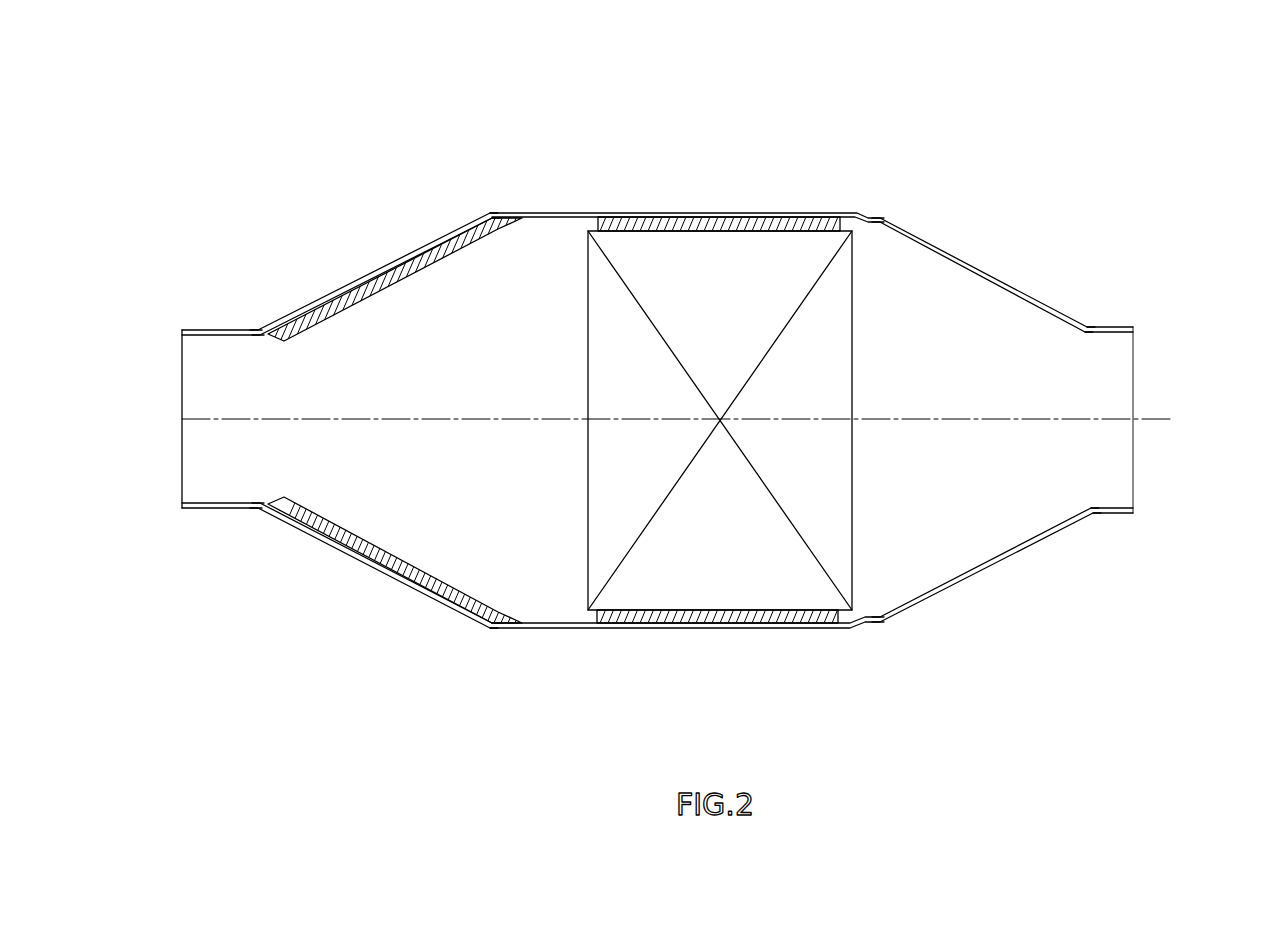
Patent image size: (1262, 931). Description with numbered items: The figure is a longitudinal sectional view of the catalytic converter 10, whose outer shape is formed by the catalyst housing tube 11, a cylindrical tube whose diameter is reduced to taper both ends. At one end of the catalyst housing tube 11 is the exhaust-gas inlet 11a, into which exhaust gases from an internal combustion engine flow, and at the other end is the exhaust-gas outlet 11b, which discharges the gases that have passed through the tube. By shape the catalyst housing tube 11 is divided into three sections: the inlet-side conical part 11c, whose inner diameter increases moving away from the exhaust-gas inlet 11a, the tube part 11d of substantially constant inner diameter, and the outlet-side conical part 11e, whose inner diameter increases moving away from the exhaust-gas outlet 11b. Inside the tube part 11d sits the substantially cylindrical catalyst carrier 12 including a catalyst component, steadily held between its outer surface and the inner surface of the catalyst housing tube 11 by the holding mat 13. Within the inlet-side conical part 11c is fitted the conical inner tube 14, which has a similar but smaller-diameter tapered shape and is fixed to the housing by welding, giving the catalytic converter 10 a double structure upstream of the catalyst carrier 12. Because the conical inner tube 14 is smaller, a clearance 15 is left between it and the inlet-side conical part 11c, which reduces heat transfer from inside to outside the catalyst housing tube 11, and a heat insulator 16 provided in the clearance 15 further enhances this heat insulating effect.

The catalytic converter 10 is at (769, 123).
The catalyst housing tube 11 is at (908, 607).
The exhaust-gas inlet 11a is at (188, 439).
The exhaust-gas outlet 11b is at (1133, 445).
The inlet-side conical part 11c is at (182, 318).
The tube part 11d is at (860, 190).
The outlet-side conical part 11e is at (1133, 320).
The catalyst carrier 12 is at (708, 553).
The holding mat 13 is at (778, 225).
The conical inner tube 14 is at (390, 288).
The clearance 15 is at (415, 255).
The heat insulator 16 is at (411, 425).